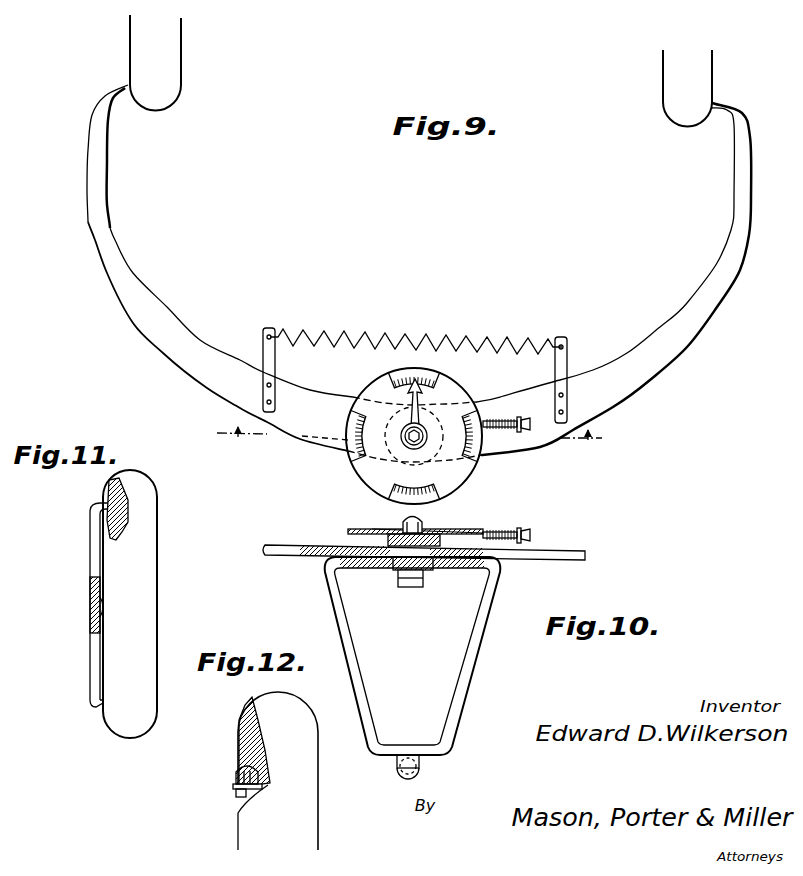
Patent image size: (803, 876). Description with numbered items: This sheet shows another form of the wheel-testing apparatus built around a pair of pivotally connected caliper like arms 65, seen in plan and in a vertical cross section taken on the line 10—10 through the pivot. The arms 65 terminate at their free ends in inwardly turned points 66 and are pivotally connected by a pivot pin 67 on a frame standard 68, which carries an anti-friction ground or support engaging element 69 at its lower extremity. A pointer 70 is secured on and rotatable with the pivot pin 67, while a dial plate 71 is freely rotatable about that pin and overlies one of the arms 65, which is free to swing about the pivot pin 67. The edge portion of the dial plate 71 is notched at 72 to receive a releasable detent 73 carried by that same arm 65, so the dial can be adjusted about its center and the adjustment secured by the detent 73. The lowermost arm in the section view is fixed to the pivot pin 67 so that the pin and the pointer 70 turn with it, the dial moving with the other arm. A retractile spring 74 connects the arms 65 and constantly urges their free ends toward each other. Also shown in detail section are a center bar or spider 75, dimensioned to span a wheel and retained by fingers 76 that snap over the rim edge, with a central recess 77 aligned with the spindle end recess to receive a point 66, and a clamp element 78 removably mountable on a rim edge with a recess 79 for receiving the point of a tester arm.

In FIG. 9, the section line 10— 10 is at (410, 436).
In FIG. 9, the caliper like arms 65 is at (204, 344).
In FIG. 10, the caliper like arms 65 is at (424, 552).
In FIG. 9, the inwardly turned points 66 is at (128, 87).
In FIG. 9, the pivot pin 67 is at (422, 428).
In FIG. 10, the pivot pin 67 is at (392, 578).
In FIG. 10, the frame standard 68 is at (457, 689).
In FIG. 10, the anti-friction ground or support engaging element 69 is at (400, 777).
In FIG. 9, the pointer 70 is at (360, 392).
In FIG. 10, the pointer 70 is at (423, 530).
In FIG. 9, the dial plate 71 is at (392, 373).
In FIG. 10, the dial plate 71 is at (373, 528).
In FIG. 9, the notches 72 is at (340, 441).
In FIG. 10, the notches 72 is at (347, 531).
In FIG. 9, the releasable detent 73 is at (490, 418).
In FIG. 10, the releasable detent 73 is at (497, 528).
In FIG. 9, the retractile spring 74 is at (322, 328).
In FIG. 11, the center bar or spider 75 is at (88, 557).
In FIG. 11, the fingers 76 is at (100, 502).
In FIG. 11, the recess 77 is at (85, 608).
In FIG. 12, the clamp element 78 is at (230, 790).
In FIG. 12, the recess 79 is at (230, 777).